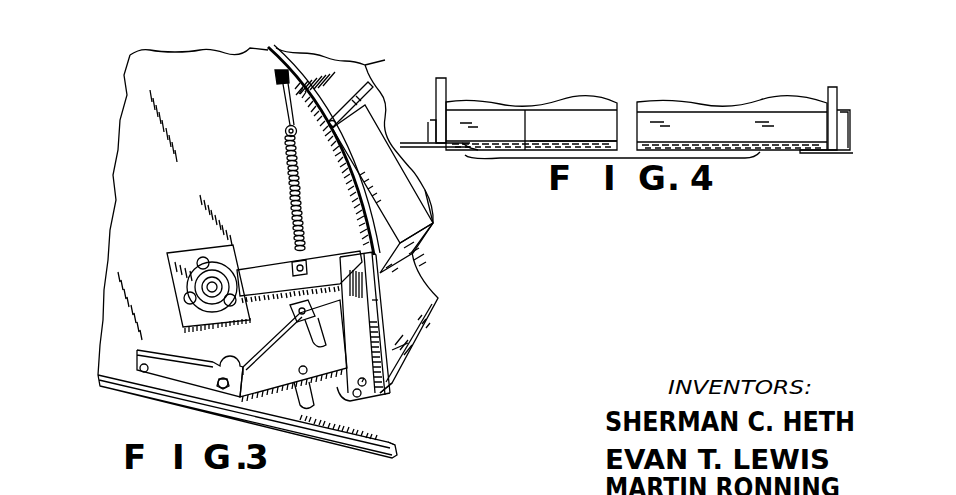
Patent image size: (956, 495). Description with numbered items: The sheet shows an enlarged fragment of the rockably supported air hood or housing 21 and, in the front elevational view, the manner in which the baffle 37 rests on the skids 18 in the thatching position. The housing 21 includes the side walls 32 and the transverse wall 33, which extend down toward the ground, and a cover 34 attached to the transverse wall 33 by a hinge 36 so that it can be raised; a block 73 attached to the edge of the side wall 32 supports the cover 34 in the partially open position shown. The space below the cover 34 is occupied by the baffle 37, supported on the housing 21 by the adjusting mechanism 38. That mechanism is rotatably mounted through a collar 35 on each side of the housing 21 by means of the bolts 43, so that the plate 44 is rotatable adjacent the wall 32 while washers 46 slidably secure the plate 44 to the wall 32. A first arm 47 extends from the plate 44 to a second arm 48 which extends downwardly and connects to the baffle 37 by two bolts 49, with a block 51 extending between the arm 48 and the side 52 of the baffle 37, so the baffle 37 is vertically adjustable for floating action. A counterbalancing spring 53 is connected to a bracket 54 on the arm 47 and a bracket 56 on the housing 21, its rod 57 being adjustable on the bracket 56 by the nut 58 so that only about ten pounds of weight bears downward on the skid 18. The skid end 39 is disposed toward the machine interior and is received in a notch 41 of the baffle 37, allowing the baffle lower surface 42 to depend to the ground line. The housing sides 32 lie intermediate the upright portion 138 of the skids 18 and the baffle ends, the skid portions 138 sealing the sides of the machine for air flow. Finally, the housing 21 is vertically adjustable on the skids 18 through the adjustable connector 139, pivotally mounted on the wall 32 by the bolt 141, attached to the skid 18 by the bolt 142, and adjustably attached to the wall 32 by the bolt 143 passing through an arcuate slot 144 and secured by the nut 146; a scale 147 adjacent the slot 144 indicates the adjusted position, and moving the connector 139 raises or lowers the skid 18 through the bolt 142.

In FIG. 3, the skid 18 is at (398, 422).
In FIG. 4, the skid 18 is at (432, 140).
In FIG. 3, the air hood or housing 21 is at (262, 38).
In FIG. 3, the side wall 32 is at (113, 158).
In FIG. 4, the side wall 32 is at (446, 78).
In FIG. 3, the transverse wall 33 is at (368, 62).
In FIG. 3, the cover 34 is at (416, 192).
In FIG. 3, the collar 35 is at (183, 322).
In FIG. 3, the hinge 36 is at (372, 93).
In FIG. 3, the baffle 37 is at (452, 301).
In FIG. 4, the baffle 37 is at (665, 98).
In FIG. 3, the adjusting mechanism 38 is at (335, 248).
In FIG. 4, the skid end 39 is at (470, 150).
In FIG. 4, the notch 41 is at (470, 142).
In FIG. 4, the baffle lower surface 42 is at (573, 127).
In FIG. 3, the bolts 43 is at (212, 268).
In FIG. 3, the plate 44 is at (230, 262).
In FIG. 3, the washers 46 is at (184, 297).
In FIG. 3, the first arm 47 is at (262, 268).
In FIG. 3, the second arm 48 is at (367, 298).
In FIG. 3, the bolts 49 is at (359, 361).
In FIG. 3, the block 51 is at (392, 388).
In FIG. 3, the baffle side 52 is at (385, 352).
In FIG. 3, the counterbalancing spring 53 is at (285, 150).
In FIG. 3, the bracket 54 is at (290, 284).
In FIG. 3, the bracket 56 is at (282, 90).
In FIG. 3, the rod 57 is at (284, 112).
In FIG. 3, the nut 58 is at (275, 72).
In FIG. 3, the block 73 is at (380, 233).
In FIG. 3, the upright portion 138 is at (328, 415).
In FIG. 3, the adjustable connector 139 is at (180, 360).
In FIG. 3, the bolt 141 is at (128, 349).
In FIG. 3, the bolt 142 is at (212, 390).
In FIG. 3, the bolt 143 is at (290, 314).
In FIG. 3, the arcuate slot 144 is at (295, 351).
In FIG. 3, the nut 146 is at (272, 342).
In FIG. 3, the scale 147 is at (305, 363).